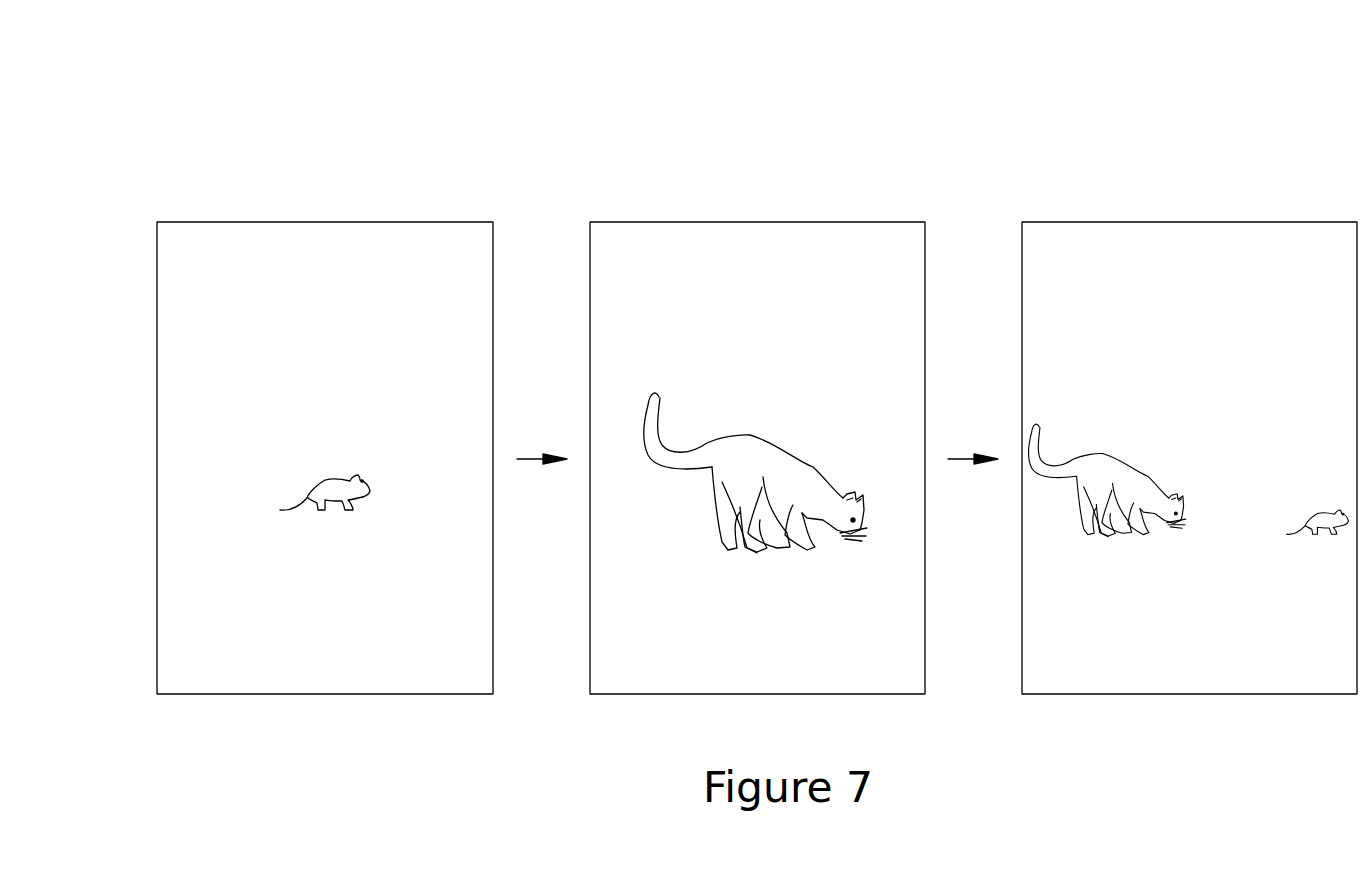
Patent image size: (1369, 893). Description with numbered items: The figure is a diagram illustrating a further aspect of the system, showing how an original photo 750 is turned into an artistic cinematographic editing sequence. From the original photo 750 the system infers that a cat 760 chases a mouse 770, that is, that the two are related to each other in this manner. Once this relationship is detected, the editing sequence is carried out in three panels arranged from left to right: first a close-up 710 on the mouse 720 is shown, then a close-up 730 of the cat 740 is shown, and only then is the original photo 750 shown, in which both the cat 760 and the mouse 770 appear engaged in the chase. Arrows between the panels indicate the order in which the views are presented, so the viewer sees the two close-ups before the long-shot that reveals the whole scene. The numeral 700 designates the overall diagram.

The image sequence illustrating close-up to long-shot transition 700 is at (225, 81).
The close-up 710 is at (175, 221).
The mouse 720 is at (325, 477).
The close-up 730 is at (608, 221).
The cat 740 is at (756, 434).
The original photo 750 is at (1021, 221).
The cat 760 is at (1100, 452).
The mouse 770 is at (1322, 508).